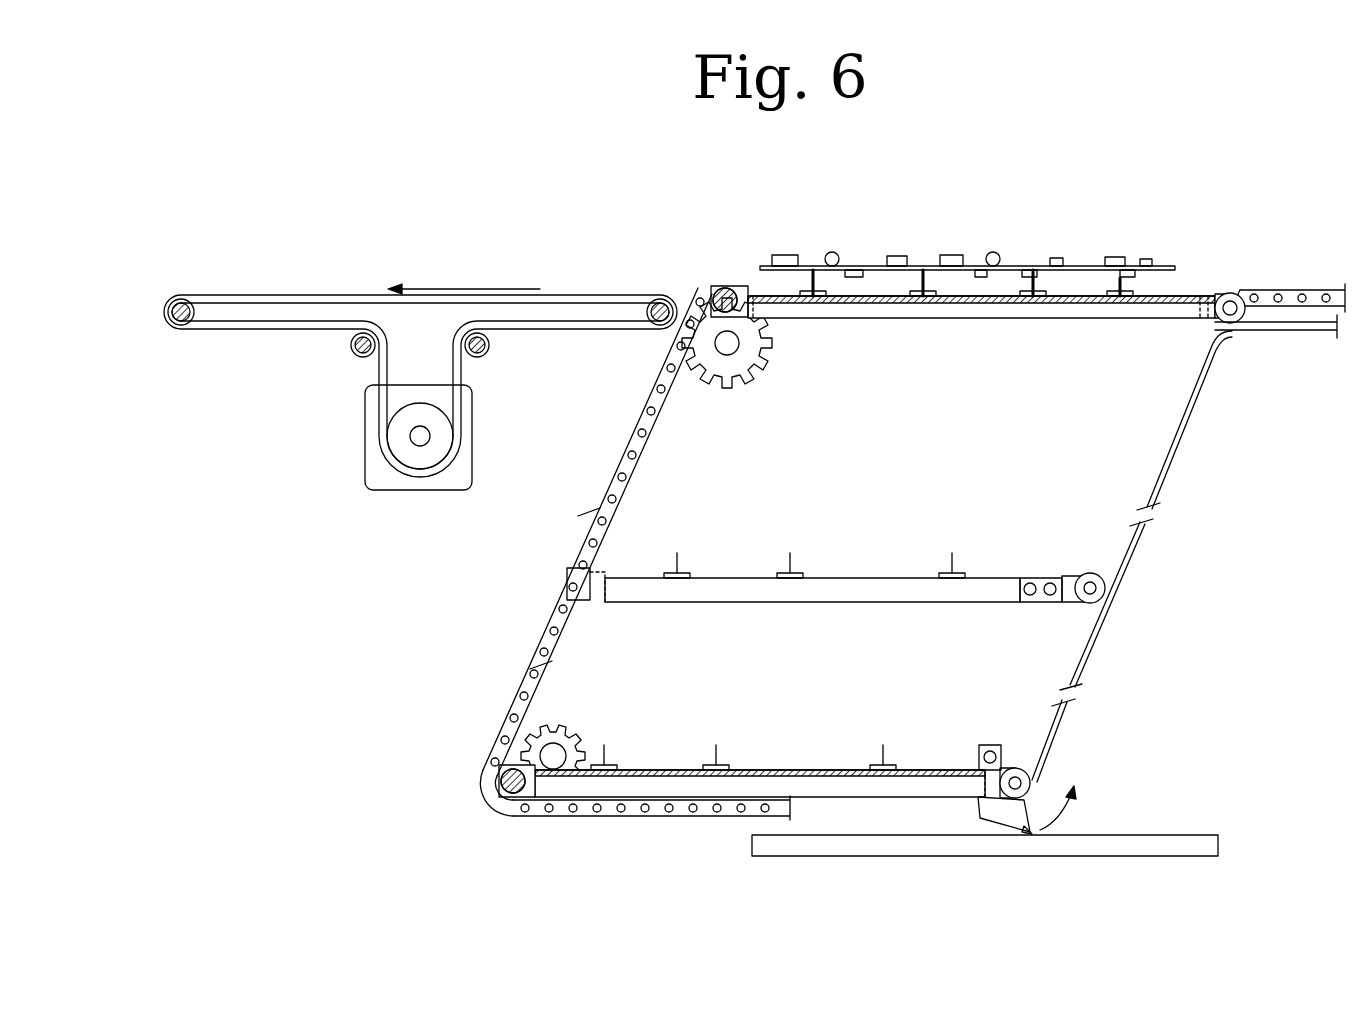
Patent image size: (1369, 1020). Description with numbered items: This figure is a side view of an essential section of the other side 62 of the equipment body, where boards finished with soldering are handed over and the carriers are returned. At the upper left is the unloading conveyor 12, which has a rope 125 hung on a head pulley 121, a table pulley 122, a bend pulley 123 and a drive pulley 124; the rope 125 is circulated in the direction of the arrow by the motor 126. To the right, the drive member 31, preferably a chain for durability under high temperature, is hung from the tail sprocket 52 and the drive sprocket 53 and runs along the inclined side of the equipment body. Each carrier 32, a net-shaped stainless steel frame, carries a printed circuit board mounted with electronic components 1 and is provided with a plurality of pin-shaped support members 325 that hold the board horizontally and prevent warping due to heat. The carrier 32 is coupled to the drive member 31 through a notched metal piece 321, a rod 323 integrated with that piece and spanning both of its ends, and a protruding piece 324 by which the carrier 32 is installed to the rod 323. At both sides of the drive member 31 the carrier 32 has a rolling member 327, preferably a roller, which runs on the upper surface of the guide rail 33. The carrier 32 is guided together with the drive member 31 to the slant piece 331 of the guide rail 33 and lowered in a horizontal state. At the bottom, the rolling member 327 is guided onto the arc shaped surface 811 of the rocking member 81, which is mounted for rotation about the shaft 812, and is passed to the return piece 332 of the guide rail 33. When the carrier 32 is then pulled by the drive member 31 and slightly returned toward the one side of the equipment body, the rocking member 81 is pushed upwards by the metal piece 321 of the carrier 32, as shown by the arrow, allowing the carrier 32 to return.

The electronic components 1 is at (838, 262).
The unloading conveyor 12 is at (414, 365).
The head pulley 121 is at (656, 299).
The table pulley 122 is at (178, 299).
The bend pulley 123 is at (353, 355).
The drive pulley 124 is at (408, 445).
The rope 125 is at (337, 294).
The motor 126 is at (420, 491).
The drive member 31 is at (620, 460).
The carrier 32 is at (885, 319).
The notched metal piece 321 is at (577, 568).
The rod 323 is at (716, 290).
The protruding piece 324 is at (746, 292).
The pin-shaped support members 325 is at (838, 319).
The rolling member 327 is at (1242, 322).
The guide rail 33 is at (1320, 334).
The slant piece 331 is at (1148, 470).
The return piece 332 is at (1188, 833).
The tail sprocket 52 is at (738, 388).
The drive sprocket 53 is at (562, 733).
The other side of the equipment body 62 is at (1148, 618).
The rocking member 81 is at (968, 806).
The arc shaped surface 811 is at (1022, 836).
The shaft 812 is at (1003, 750).